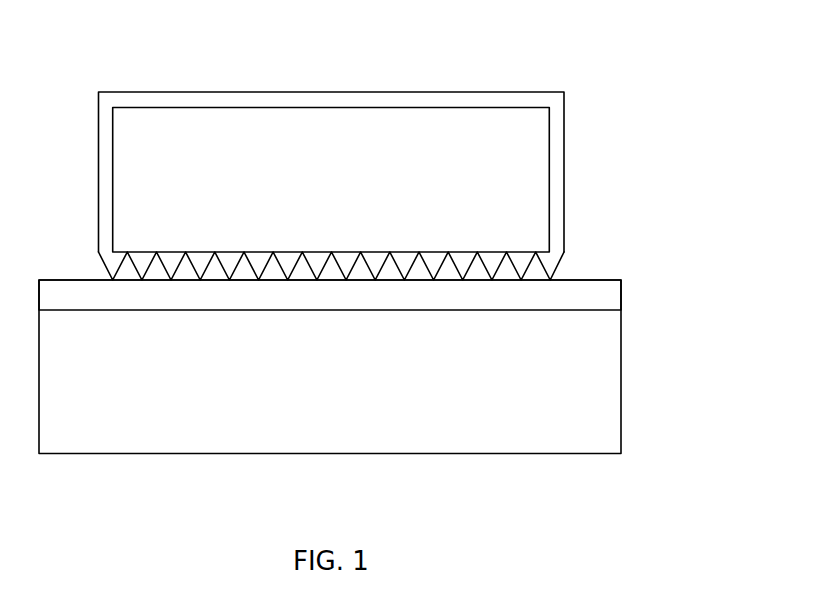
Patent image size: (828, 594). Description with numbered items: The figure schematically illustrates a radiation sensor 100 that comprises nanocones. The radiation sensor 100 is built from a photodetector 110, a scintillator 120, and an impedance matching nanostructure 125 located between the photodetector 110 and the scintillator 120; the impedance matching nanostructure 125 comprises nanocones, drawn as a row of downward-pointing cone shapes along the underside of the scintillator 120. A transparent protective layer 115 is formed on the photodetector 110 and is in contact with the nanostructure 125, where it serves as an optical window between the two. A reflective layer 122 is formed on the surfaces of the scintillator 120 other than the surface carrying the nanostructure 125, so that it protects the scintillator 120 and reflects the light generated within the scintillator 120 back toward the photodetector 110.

The radiation sensor 100 is at (315, 48).
The photodetector 110 is at (613, 395).
The transparent protective layer 115 is at (613, 300).
The scintillator 120 is at (533, 158).
The reflective layer 122 is at (388, 98).
The impedance matching nanostructure 125 is at (520, 262).